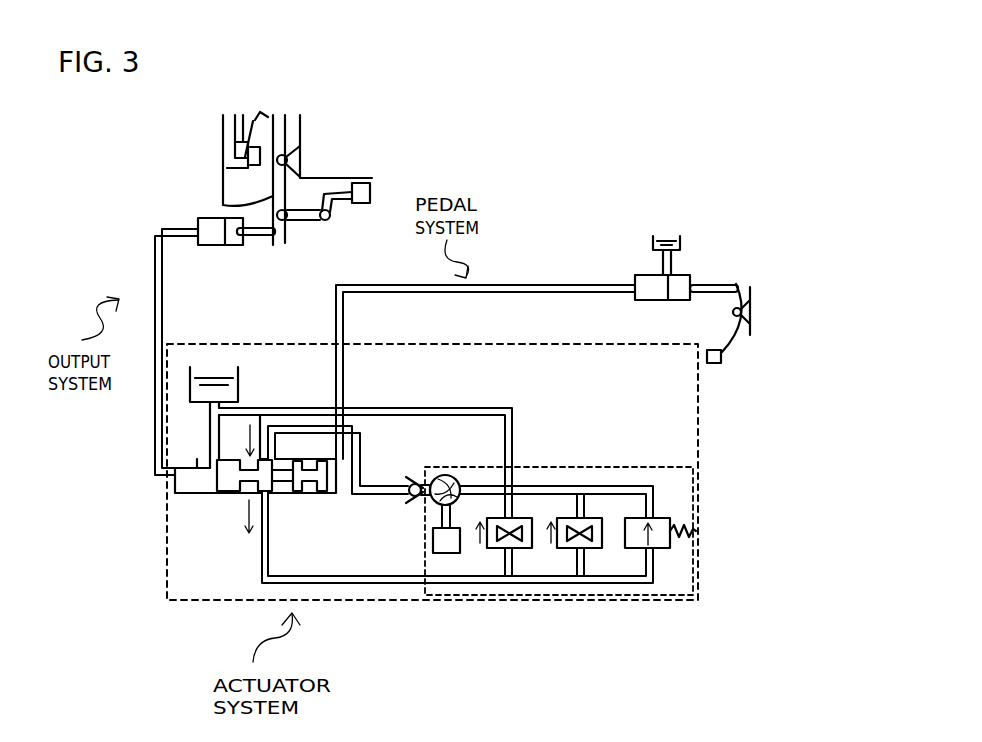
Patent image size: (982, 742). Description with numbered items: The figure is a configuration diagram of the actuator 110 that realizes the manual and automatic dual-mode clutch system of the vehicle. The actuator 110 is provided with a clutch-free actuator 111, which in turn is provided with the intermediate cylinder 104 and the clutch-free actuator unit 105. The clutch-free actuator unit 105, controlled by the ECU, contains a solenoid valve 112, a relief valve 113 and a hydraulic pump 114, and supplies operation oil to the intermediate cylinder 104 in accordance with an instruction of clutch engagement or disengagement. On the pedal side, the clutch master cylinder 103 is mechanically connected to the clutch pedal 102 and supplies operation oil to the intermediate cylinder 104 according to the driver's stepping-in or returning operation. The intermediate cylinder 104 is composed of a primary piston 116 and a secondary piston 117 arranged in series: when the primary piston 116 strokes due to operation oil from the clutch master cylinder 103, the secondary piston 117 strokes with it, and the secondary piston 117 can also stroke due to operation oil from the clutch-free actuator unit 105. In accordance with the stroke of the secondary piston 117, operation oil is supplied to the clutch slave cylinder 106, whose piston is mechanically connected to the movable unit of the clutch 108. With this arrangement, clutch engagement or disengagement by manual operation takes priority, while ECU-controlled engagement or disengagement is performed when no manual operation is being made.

The clutch pedal 102 is at (718, 288).
The clutch master cylinder 103 is at (643, 275).
The intermediate cylinder 104 is at (342, 464).
The clutch-free actuator unit 105 is at (540, 466).
The clutch slave cylinder 106 is at (212, 218).
The clutch 108 is at (292, 134).
The actuator 110 is at (736, 158).
The clutch-free actuator 111 is at (412, 343).
The solenoid valve 112 is at (500, 548).
The relief valve 113 is at (663, 514).
The hydraulic pump 114 is at (434, 508).
The primary piston 116 is at (192, 560).
The secondary piston 117 is at (222, 493).